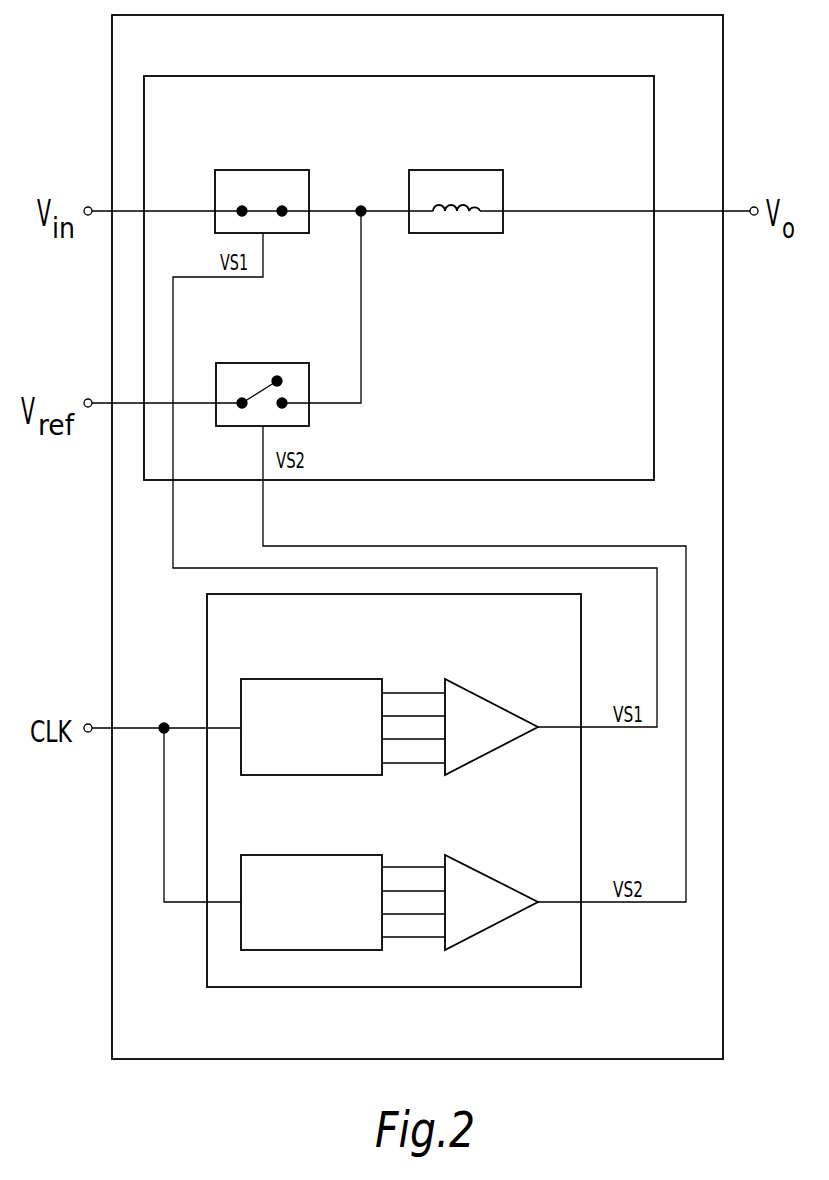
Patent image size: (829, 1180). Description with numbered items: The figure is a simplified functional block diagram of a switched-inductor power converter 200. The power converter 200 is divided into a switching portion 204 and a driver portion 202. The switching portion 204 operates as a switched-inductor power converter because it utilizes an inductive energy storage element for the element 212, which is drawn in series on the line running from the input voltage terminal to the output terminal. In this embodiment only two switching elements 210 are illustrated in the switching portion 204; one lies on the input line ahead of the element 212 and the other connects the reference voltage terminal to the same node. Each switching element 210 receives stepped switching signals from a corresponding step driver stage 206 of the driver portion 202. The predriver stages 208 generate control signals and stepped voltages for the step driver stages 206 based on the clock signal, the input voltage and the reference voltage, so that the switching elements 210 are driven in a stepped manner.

The power converter 200 is at (718, 44).
The driver portion 202 is at (583, 617).
The switching portion 204 is at (650, 73).
The step driver stage 206 is at (496, 698).
The predriver stage 208 is at (378, 678).
The switching element 210 is at (306, 168).
The element 212 is at (502, 168).